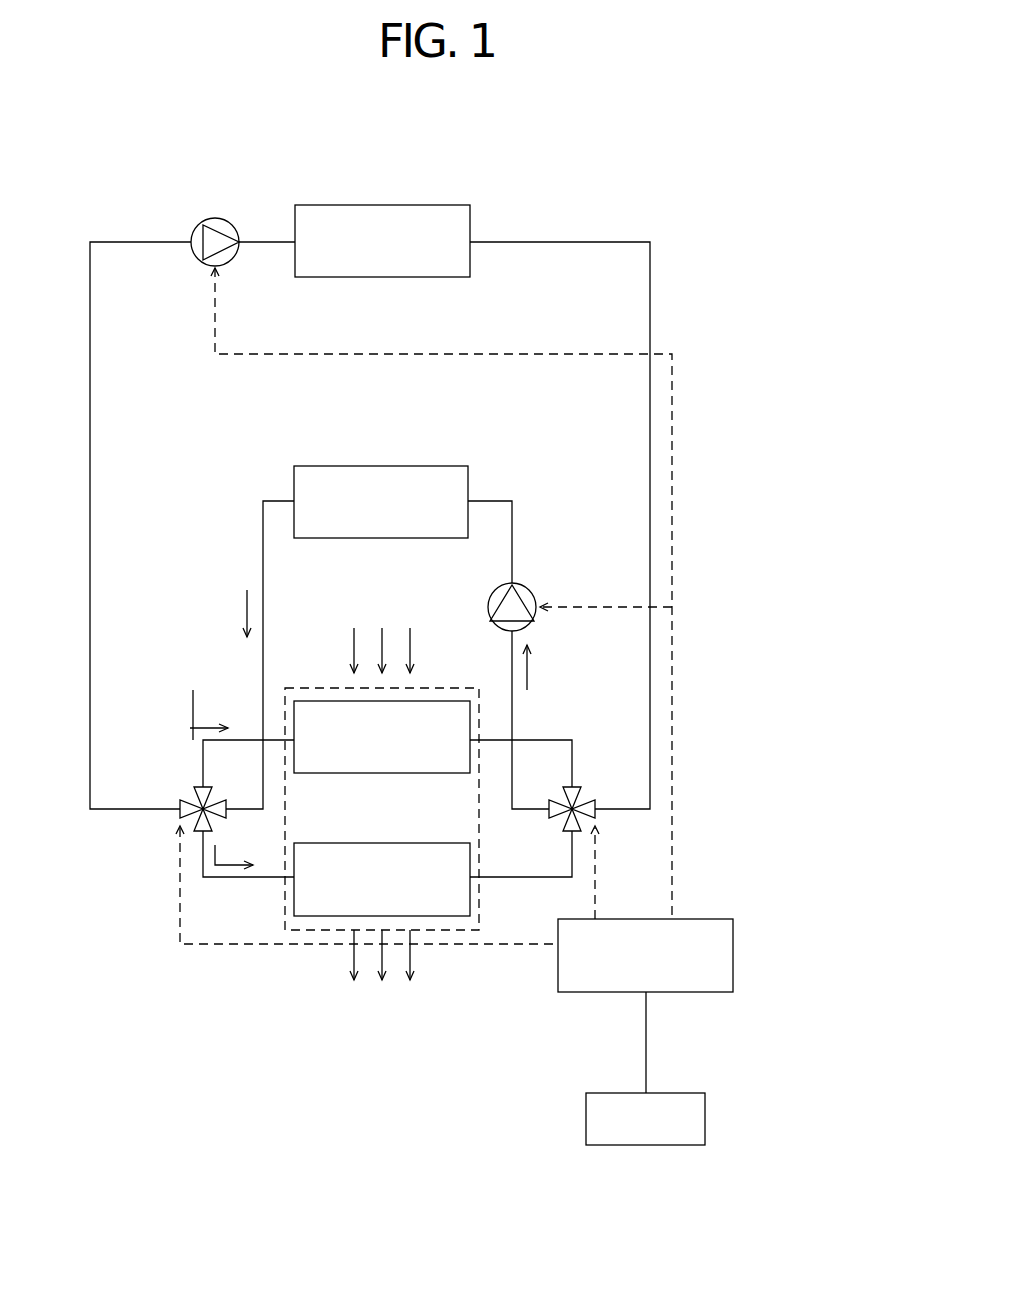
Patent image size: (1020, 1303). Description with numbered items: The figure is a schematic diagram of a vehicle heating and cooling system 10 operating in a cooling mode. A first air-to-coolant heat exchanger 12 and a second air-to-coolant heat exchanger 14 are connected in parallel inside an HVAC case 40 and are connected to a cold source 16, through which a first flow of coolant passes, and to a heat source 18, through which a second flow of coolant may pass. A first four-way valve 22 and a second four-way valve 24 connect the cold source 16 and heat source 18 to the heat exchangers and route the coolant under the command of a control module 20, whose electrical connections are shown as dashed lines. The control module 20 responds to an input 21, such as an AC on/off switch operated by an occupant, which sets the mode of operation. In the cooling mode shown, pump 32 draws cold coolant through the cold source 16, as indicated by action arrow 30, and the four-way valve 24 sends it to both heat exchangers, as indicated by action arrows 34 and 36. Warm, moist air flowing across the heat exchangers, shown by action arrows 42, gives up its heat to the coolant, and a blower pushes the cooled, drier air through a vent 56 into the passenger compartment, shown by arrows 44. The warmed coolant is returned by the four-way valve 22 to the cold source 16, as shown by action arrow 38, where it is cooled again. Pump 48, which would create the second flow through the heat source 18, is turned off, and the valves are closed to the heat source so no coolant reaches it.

The vehicle heating and cooling system 10 is at (603, 220).
The first air-to-coolant heat exchanger 12 is at (443, 701).
The second air-to-coolant heat exchanger 14 is at (375, 843).
The cold source 16 is at (361, 466).
The heat source 18 is at (373, 205).
The control module 20 is at (697, 992).
The input 21 is at (705, 1128).
The first four-way valve 22 is at (580, 794).
The second four-way valve 24 is at (196, 791).
The action arrow 30 is at (247, 608).
The pump 32 is at (528, 587).
The action arrow 34 is at (215, 845).
The action arrow 36 is at (193, 690).
The action arrow 38 is at (527, 672).
The HVAC case 40 is at (315, 688).
The action arrows 42 is at (410, 647).
The arrows 44 is at (410, 955).
The pump 48 is at (221, 219).
The vent 56 is at (318, 930).